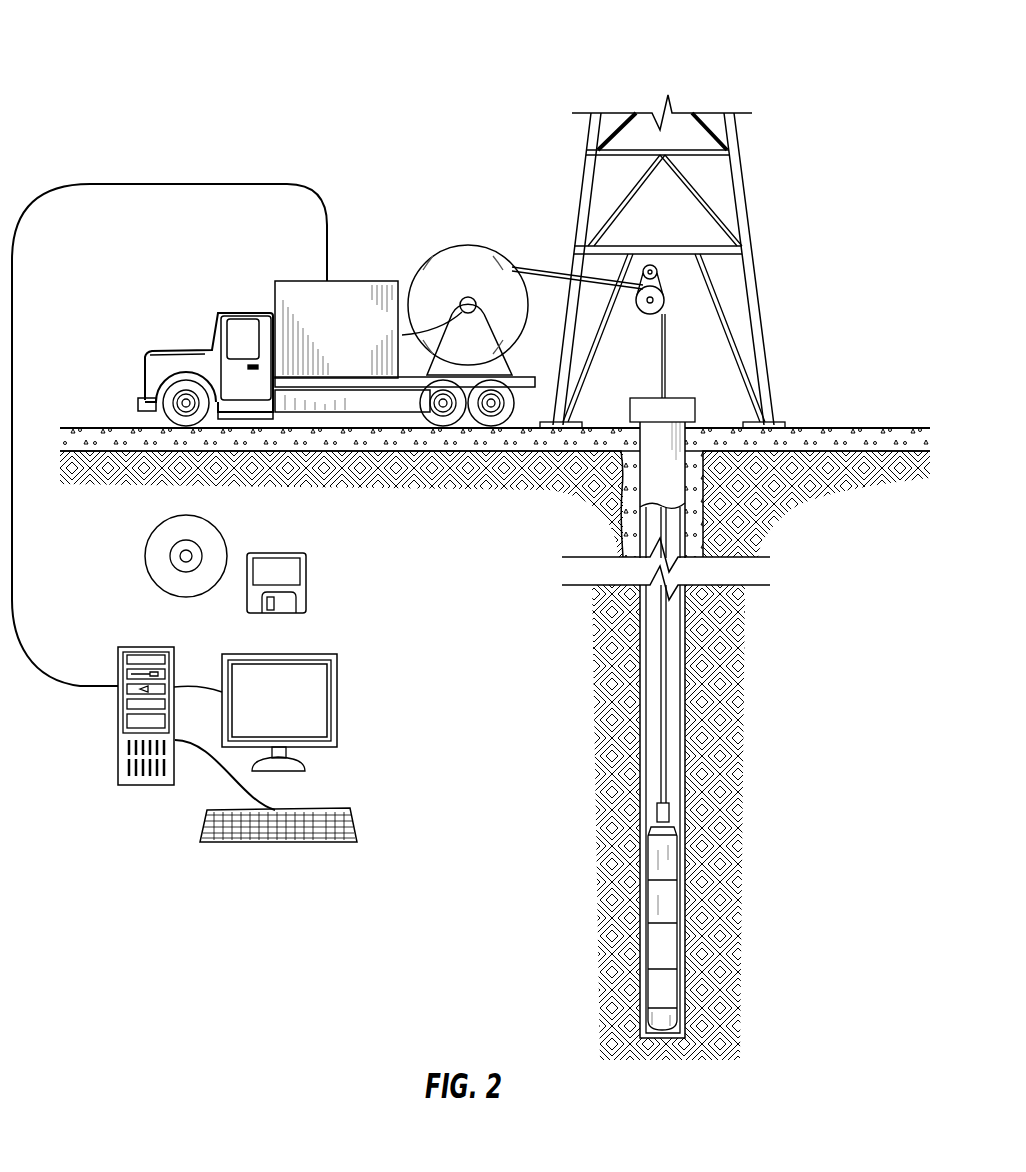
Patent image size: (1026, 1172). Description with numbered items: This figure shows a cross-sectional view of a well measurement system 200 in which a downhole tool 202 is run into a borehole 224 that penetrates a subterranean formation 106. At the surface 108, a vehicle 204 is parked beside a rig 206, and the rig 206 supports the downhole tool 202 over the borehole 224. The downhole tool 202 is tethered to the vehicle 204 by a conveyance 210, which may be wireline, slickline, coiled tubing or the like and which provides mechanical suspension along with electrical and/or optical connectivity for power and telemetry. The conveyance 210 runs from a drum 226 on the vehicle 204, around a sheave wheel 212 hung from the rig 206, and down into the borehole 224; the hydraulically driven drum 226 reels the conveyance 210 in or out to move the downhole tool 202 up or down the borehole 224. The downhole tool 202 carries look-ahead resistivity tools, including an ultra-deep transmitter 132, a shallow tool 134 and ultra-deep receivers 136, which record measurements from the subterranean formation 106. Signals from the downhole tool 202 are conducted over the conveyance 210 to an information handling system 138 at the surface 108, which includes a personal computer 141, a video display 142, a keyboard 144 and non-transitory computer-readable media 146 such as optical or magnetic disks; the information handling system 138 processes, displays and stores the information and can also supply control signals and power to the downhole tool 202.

The well measurement system 200 is at (153, 42).
The vehicle 204 is at (345, 281).
The drum 226 is at (468, 249).
The rig 206 is at (752, 266).
The sheave wheel 212 is at (648, 318).
The surface 108 is at (820, 428).
The borehole 224 is at (751, 539).
The subterranean formation 106 is at (859, 666).
The conveyance 210 is at (660, 674).
The downhole tool 202 is at (634, 888).
The ultra-deep receiver 136 is at (670, 887).
The shallow tool 134 is at (670, 975).
The ultra-deep transmitter 132 is at (670, 1009).
The information handling system 138 is at (143, 865).
The personal computer 141 is at (148, 647).
The video display 142 is at (282, 654).
The keyboard 144 is at (357, 827).
The non-transitory computer-readable media 146 is at (210, 515).